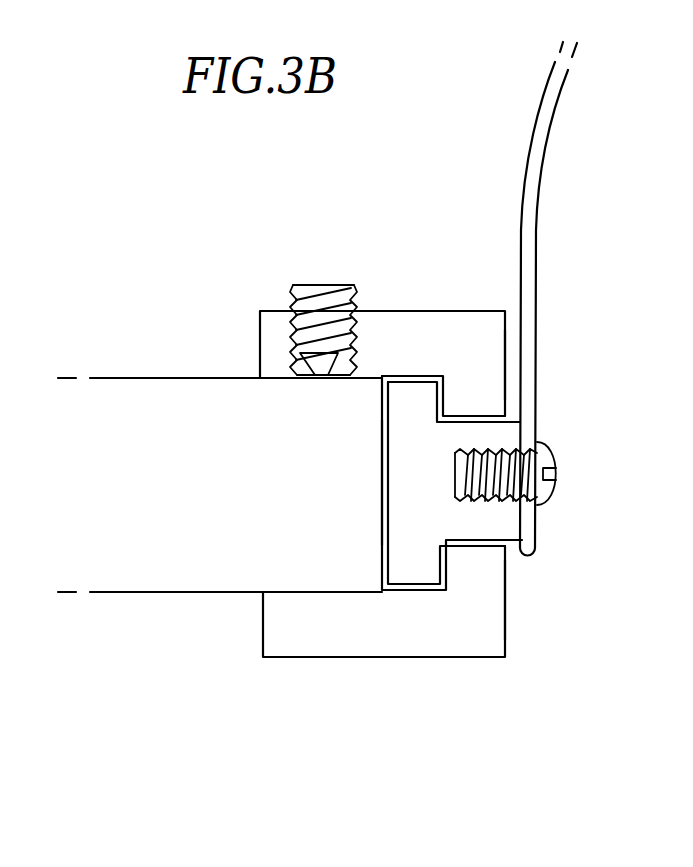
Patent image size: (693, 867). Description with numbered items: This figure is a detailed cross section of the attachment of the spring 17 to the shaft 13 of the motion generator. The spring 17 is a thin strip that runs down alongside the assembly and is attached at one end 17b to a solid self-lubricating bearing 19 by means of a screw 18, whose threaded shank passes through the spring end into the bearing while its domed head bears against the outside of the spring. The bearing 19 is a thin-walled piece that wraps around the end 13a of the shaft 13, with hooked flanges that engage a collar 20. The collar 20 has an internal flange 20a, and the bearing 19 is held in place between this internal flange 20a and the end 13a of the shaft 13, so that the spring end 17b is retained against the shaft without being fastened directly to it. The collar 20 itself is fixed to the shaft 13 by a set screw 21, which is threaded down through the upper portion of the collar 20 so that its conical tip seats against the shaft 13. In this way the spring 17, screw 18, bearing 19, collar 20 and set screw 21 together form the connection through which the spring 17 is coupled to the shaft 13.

The shaft 13 is at (127, 420).
The end of shaft 13a is at (360, 478).
The spring 17 is at (541, 158).
The end of spring 17b is at (537, 543).
The screw 18 is at (551, 450).
The solid self-lubricating bearing 19 is at (490, 520).
The collar 20 is at (310, 627).
The internal flange 20a is at (477, 380).
The set screw 21 is at (323, 285).